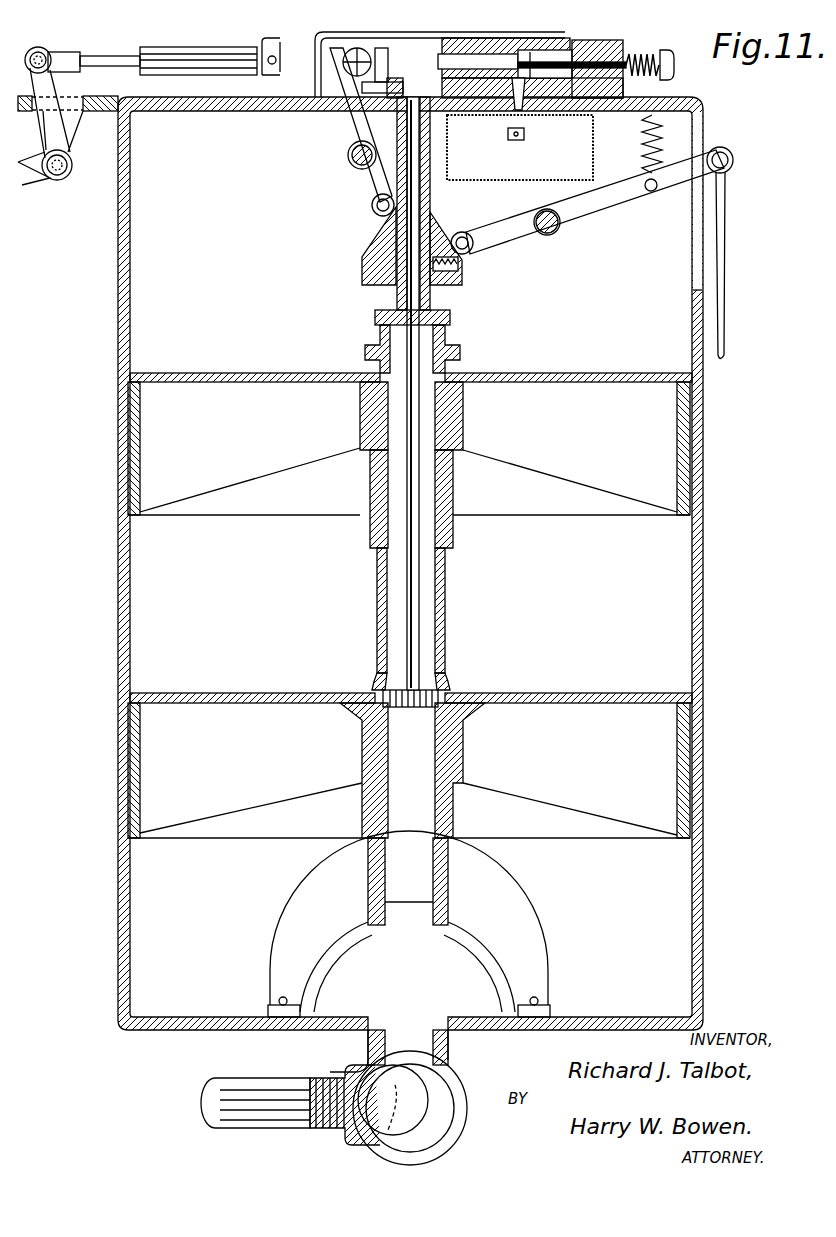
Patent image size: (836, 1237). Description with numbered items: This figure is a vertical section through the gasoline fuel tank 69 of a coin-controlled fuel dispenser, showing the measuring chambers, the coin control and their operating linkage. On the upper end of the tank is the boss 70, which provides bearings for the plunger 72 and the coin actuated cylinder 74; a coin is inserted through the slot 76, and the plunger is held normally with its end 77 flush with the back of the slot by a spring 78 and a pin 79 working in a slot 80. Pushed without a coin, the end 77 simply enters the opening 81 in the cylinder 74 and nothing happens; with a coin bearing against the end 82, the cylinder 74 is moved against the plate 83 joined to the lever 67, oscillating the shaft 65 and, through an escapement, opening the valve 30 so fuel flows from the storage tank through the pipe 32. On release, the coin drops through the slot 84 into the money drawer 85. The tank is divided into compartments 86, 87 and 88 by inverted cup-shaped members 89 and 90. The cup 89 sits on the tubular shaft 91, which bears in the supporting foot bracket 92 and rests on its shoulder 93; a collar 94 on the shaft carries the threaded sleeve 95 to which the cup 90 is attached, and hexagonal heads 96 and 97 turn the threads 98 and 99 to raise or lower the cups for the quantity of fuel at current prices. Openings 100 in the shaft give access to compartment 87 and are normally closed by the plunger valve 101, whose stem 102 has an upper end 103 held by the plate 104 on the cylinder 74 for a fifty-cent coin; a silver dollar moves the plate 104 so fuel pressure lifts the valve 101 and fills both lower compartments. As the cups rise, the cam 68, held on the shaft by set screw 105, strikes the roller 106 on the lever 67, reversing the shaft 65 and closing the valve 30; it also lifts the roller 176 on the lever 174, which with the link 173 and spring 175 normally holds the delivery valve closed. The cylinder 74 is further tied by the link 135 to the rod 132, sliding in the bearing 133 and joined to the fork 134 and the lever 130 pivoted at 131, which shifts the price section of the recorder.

The valve 30 is at (462, 1128).
The pipe 32 is at (262, 1090).
The shaft 65 is at (348, 155).
The lever 67 is at (352, 128).
The cam 68 is at (364, 248).
The gasoline fuel tank 69 is at (704, 584).
The boss 70 is at (598, 42).
The plunger 72 is at (666, 50).
The coin actuated cylinder 74 is at (470, 54).
The slot 76 is at (560, 50).
The end 77 is at (518, 76).
The spring 78 is at (664, 78).
The pin 79 is at (530, 50).
The slot 80 is at (586, 60).
The opening 81 is at (452, 40).
The end 82 is at (496, 100).
The plate 83 is at (350, 45).
The slot 84 is at (522, 112).
The money drawer 85 is at (535, 168).
The compartment 86 is at (411, 928).
The compartment 87 is at (411, 604).
The compartment 88 is at (411, 242).
The inverted cup-shaped member 89 is at (580, 694).
The inverted cup-shaped member 90 is at (598, 374).
The tubular shaft 91 is at (446, 636).
The supporting foot bracket 92 is at (376, 928).
The shoulder 93 is at (420, 905).
The collar 94 is at (454, 536).
The threaded sleeve 95 is at (454, 494).
The hexagonal head 96 is at (452, 318).
The hexagonal head 97 is at (461, 348).
The threads 98 is at (449, 812).
The threads 99 is at (368, 468).
The openings 100 is at (376, 676).
The plunger valve 101 is at (405, 708).
The stem 102 is at (407, 585).
The upper end 103 is at (406, 135).
The plate 104 is at (376, 60).
The set screw 105 is at (464, 278).
The roller 106 is at (372, 204).
The lever 130 is at (66, 143).
The pivot 131 is at (50, 180).
The rod 132 is at (94, 56).
The bearing 133 is at (186, 30).
The fork 134 is at (62, 48).
The link 135 is at (280, 40).
The link 173 is at (723, 280).
The lever 174 is at (590, 224).
The spring 175 is at (658, 155).
The roller 176 is at (460, 232).